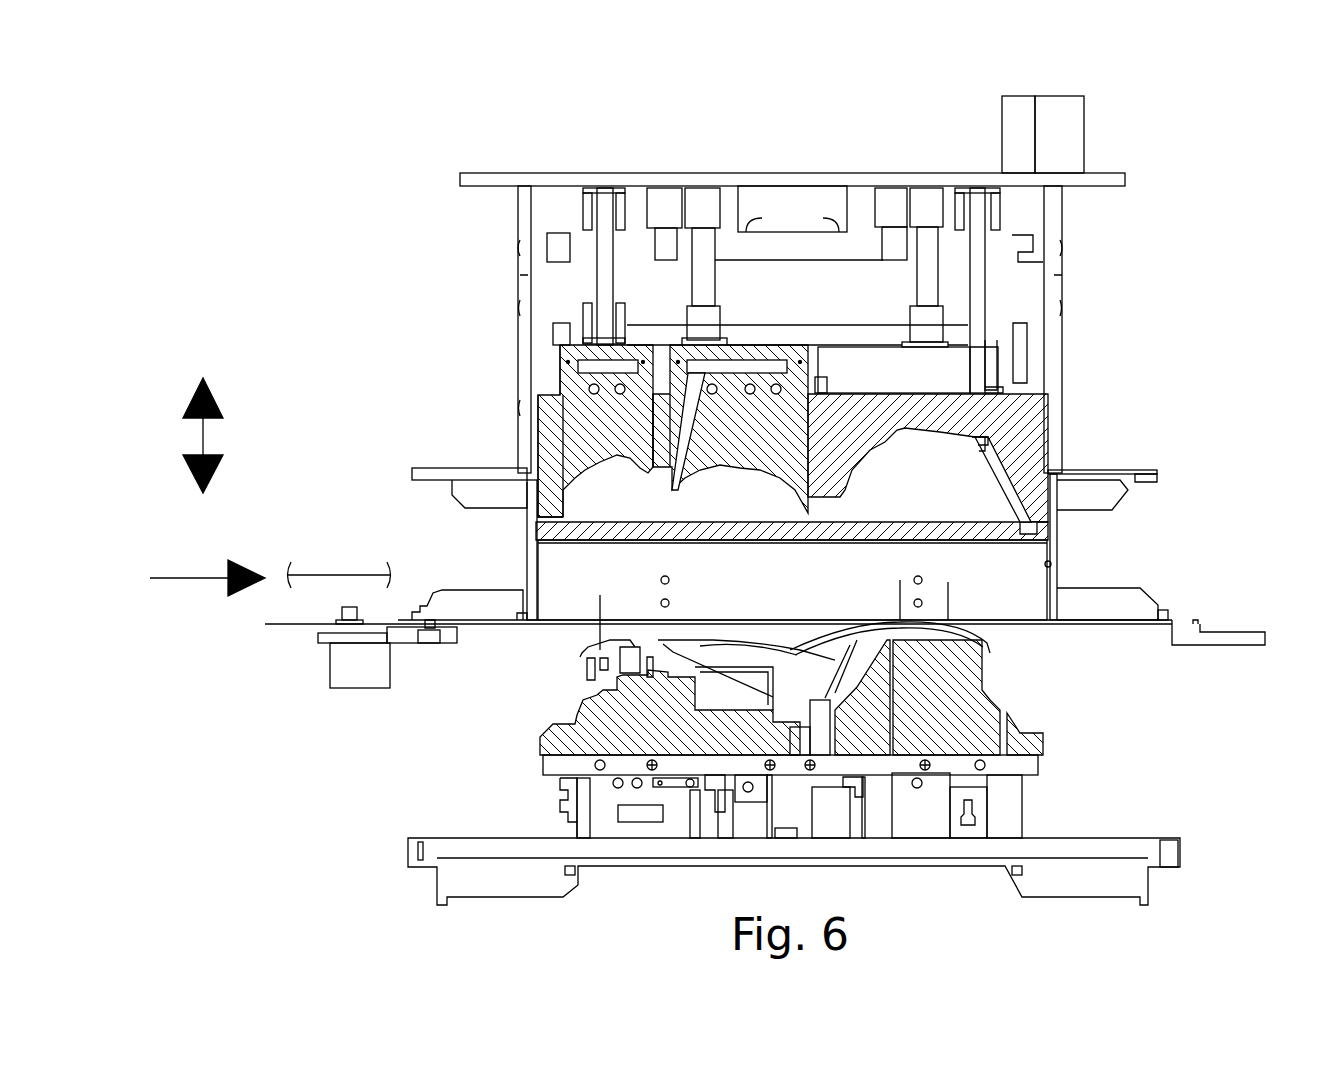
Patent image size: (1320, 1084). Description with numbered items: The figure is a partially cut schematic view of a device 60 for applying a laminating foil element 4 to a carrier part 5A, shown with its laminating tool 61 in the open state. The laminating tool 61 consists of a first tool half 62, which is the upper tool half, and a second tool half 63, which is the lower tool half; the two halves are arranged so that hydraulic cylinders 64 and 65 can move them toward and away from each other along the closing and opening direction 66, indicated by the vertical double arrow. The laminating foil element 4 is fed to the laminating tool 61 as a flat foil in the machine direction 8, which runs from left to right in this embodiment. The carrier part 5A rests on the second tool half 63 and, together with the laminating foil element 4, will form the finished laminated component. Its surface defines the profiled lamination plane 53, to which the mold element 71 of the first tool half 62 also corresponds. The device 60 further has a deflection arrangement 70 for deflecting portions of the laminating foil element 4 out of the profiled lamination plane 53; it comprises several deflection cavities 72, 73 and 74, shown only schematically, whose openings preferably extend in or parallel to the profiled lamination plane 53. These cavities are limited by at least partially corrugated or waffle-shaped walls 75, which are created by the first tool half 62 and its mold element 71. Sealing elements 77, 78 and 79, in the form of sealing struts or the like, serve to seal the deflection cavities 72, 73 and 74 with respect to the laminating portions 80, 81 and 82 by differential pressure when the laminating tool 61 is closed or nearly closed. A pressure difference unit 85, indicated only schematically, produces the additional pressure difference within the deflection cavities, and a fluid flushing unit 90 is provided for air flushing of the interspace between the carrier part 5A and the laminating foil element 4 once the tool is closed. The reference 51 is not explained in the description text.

The device 60 is at (1236, 110).
The laminating tool 61 is at (503, 156).
The first tool half 62 is at (1207, 222).
The second tool half 63 is at (365, 785).
The hydraulic cylinder 64 is at (703, 210).
The hydraulic cylinder 65 is at (710, 812).
The closing and opening direction 66 is at (203, 437).
The deflection arrangement 70 is at (448, 437).
The mold element 71 is at (1052, 415).
The deflection cavity 72 is at (610, 450).
The deflection cavity 73 is at (763, 480).
The deflection cavity 74 is at (1033, 393).
The corrugated or waffle-shaped wall 75 is at (546, 430).
The sealing element 77 is at (600, 602).
The sealing element 78 is at (900, 597).
The sealing element 79 is at (948, 597).
The laminating portion 80 is at (527, 500).
The laminating portion 81 is at (660, 395).
The laminating portion 82 is at (1012, 455).
The pressure difference unit 85 is at (1020, 123).
The fluid flushing unit 90 is at (1075, 121).
The mold cavity insert 51 is at (738, 452).
The profiled lamination plane 53 is at (925, 650).
The carrier part 5A is at (583, 660).
The laminating foil element 4 is at (338, 575).
The machine direction 8 is at (192, 578).